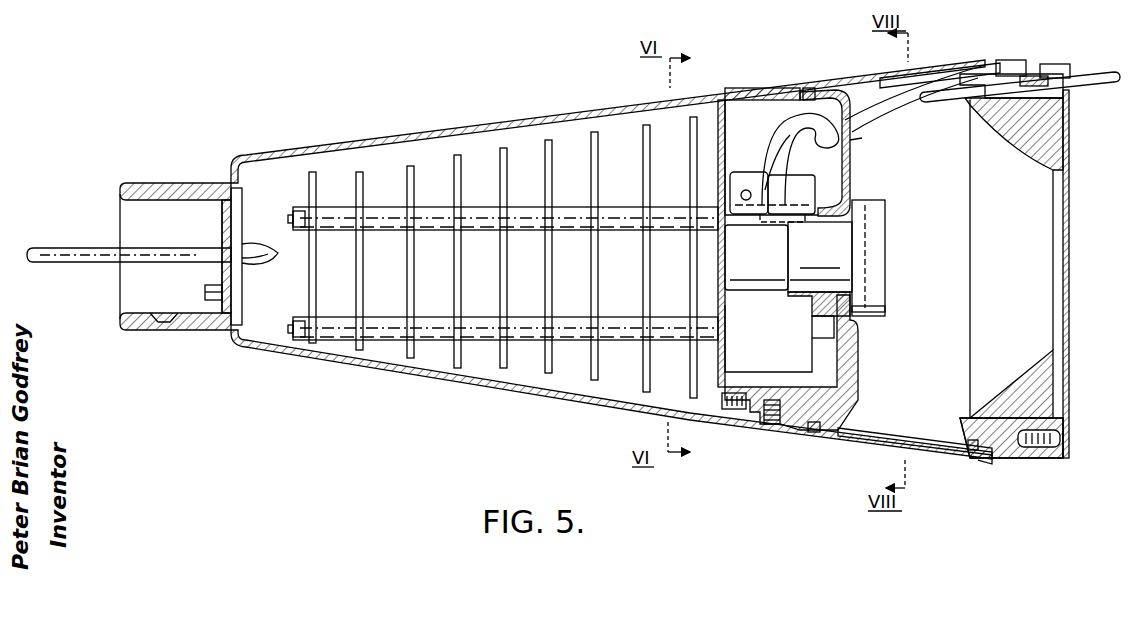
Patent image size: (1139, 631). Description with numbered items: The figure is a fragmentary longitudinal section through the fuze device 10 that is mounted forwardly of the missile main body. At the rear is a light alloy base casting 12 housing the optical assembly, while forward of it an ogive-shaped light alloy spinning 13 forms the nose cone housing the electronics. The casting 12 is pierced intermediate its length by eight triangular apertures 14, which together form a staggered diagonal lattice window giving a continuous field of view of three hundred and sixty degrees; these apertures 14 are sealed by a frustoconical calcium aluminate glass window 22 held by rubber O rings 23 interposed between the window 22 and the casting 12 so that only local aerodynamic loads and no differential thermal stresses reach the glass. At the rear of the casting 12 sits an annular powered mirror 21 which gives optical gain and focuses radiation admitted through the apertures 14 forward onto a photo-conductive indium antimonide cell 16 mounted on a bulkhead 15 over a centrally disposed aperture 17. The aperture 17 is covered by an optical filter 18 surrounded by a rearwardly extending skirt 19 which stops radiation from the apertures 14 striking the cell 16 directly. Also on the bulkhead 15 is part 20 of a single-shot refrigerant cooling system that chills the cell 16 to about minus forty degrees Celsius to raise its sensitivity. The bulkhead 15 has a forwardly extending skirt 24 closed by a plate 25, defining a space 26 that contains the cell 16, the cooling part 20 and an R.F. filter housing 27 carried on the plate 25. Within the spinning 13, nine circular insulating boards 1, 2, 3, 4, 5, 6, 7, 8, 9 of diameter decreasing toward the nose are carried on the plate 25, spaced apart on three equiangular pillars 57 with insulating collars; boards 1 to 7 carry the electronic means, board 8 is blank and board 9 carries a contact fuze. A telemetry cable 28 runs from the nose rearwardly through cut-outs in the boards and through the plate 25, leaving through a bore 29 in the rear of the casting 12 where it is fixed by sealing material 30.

The board 1 is at (692, 172).
The board 2 is at (646, 298).
The board 3 is at (598, 298).
The board 4 is at (551, 298).
The board 5 is at (505, 298).
The board 6 is at (459, 298).
The board 7 is at (411, 298).
The board 8 is at (361, 298).
The board 9 is at (313, 298).
The fuze device 10 is at (568, 103).
The base casting 12 is at (1012, 452).
The ogive-shaped spinning 13 is at (486, 386).
The triangular apertures 14 is at (855, 448).
The bulkhead 15 is at (847, 412).
The photo-conductive indium antimonide cell 16 is at (822, 256).
The centrally disposed aperture 17 is at (798, 300).
The optical filter 18 is at (858, 258).
The rearwardly extending skirt 19 is at (883, 316).
The part of cooling system 20 is at (790, 188).
The annular powered mirror 21 is at (1024, 370).
The frustoconical window 22 is at (945, 458).
The rubber O rings 23 is at (815, 428).
The forwardly extending skirt 24 is at (740, 418).
The plate 25 is at (716, 356).
The space 26 is at (753, 140).
The R.F. filter housing 27 is at (756, 360).
The telemetry cable 28 is at (1090, 72).
The bore 29 is at (1017, 80).
The sealing material 30 is at (1056, 66).
The pillars 57 is at (566, 340).